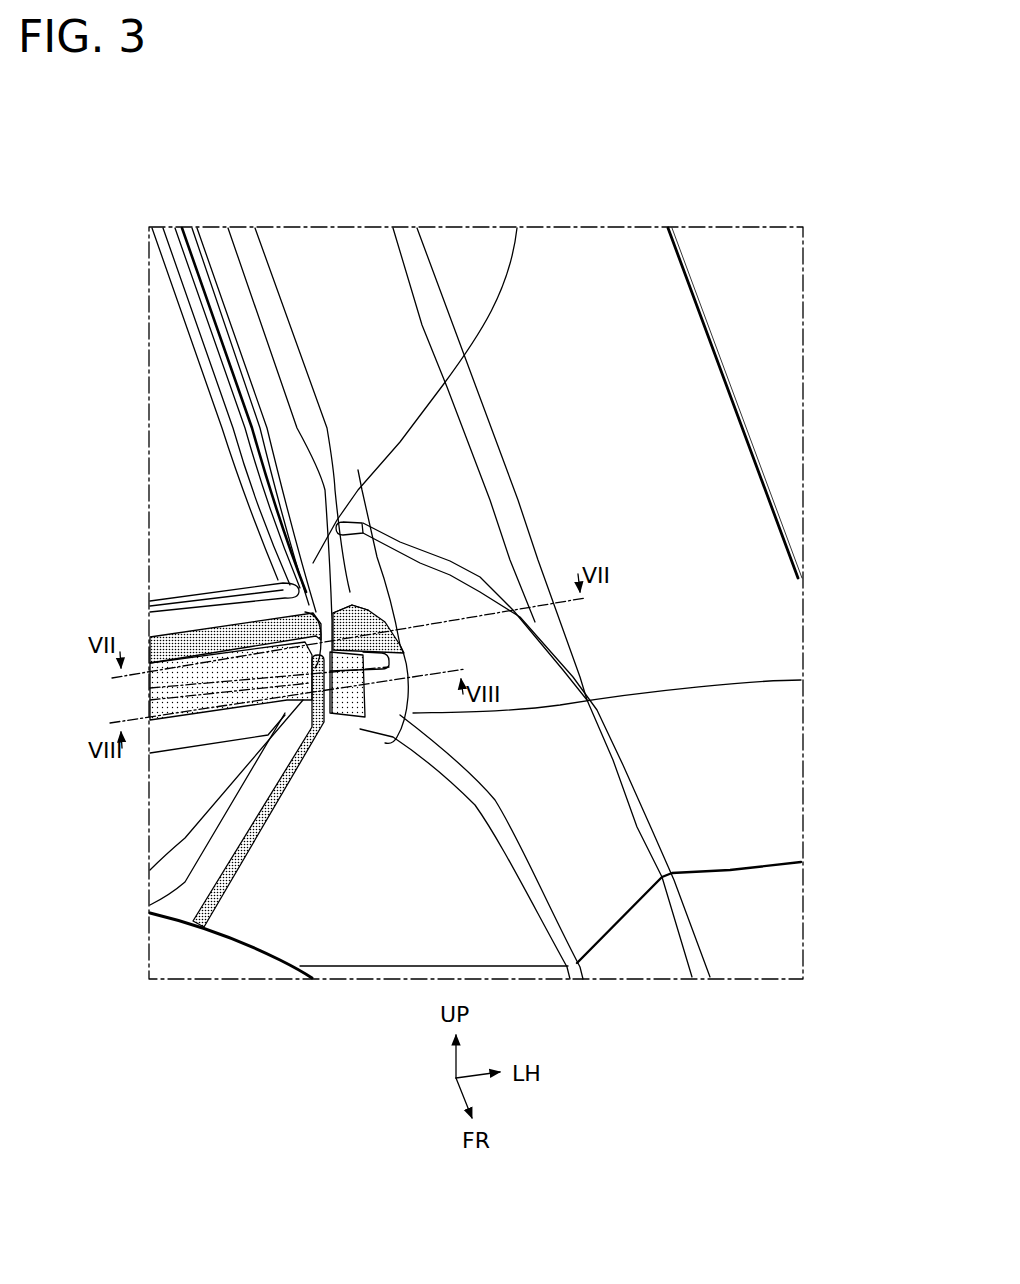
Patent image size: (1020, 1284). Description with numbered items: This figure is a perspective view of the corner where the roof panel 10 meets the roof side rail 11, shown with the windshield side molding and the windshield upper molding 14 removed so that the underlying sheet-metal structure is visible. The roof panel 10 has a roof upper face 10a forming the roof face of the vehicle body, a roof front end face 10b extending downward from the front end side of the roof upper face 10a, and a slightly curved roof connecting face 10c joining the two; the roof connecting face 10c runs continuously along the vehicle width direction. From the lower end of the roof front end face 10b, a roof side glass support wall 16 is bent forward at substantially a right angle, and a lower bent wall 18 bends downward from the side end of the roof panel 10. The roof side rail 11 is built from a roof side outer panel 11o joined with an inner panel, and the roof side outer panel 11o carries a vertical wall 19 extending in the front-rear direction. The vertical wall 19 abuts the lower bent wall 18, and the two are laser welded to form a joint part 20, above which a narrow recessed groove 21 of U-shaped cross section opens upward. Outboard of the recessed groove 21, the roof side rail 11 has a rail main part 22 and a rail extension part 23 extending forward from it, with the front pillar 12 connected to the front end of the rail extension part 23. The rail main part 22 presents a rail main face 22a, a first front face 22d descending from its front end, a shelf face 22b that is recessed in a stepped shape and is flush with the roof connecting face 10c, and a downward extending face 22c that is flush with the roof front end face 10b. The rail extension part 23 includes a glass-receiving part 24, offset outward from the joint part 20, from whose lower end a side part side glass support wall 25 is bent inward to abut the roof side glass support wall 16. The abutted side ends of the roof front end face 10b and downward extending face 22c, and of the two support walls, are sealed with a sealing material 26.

The roof panel 10 is at (150, 408).
The roof upper face 10a is at (222, 610).
The roof front end face 10b is at (173, 710).
The roof connecting face 10c is at (167, 648).
The roof side rail 11 is at (750, 407).
The roof side outer panel 11o is at (401, 305).
The front pillar 12 is at (803, 932).
The windshield upper molding 14 is at (185, 628).
The roof side glass support wall 16 is at (160, 810).
The lower bent wall 18 is at (305, 445).
The vertical wall 19 is at (306, 460).
The joint part 20 is at (336, 528).
The recessed groove 21 is at (517, 228).
The rail main part 22 is at (572, 228).
The rail main face 22a is at (360, 414).
The shelf face 22b is at (358, 543).
The downward extending face 22c is at (801, 680).
The first front face 22d is at (365, 524).
The rail extension part 23 is at (777, 815).
The glass-receiving part 24 is at (605, 886).
The side part side glass support wall 25 is at (378, 933).
The sealing material 26 is at (150, 877).